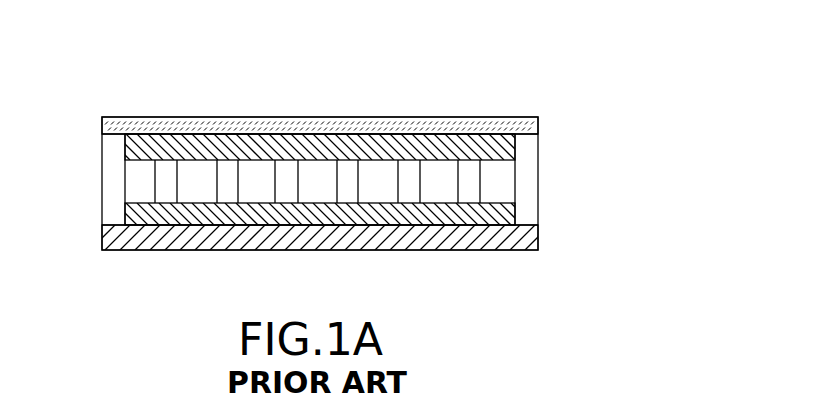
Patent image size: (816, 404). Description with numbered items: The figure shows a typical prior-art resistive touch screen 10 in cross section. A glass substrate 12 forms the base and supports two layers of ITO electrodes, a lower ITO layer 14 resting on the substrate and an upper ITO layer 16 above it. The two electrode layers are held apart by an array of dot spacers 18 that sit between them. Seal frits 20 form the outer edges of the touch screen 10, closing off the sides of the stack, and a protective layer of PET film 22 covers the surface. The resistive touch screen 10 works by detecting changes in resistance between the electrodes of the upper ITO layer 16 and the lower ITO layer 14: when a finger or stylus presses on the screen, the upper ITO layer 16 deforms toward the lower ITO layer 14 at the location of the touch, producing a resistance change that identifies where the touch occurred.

The resistive touch screen 10 is at (506, 83).
The glass substrate 12 is at (527, 237).
The lower ITO layer 14 is at (515, 213).
The upper ITO layer 16 is at (518, 148).
The dot spacers 18 is at (162, 197).
The seal frits 20 is at (120, 192).
The PET film 22 is at (240, 128).